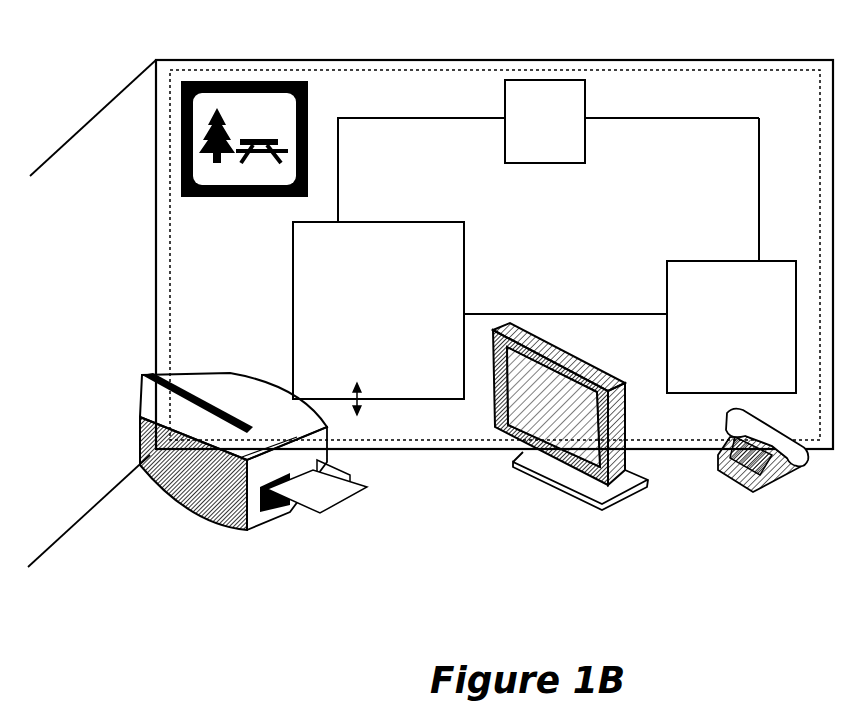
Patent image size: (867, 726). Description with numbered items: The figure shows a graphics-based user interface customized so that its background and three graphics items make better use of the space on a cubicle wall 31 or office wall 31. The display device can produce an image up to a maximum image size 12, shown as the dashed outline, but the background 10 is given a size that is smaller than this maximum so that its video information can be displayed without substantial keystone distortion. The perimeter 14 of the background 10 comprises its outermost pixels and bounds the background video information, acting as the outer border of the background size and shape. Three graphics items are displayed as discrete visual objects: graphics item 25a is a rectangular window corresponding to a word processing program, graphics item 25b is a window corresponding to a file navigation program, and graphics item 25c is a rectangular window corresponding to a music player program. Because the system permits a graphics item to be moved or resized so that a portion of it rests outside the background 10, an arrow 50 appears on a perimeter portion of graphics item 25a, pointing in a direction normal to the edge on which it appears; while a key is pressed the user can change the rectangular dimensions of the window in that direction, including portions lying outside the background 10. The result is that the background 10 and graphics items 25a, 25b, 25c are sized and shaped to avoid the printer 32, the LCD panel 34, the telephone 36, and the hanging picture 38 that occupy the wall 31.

The cubicle wall 31 is at (430, 60).
The maximum image size 12 is at (747, 68).
The background 10 is at (713, 112).
The perimeter 14 is at (762, 158).
The graphics item 25a is at (375, 222).
The graphics item 25b is at (586, 98).
The graphics item 25c is at (680, 260).
The arrow 50 is at (359, 392).
The hanging picture 38 is at (181, 147).
The printer 32 is at (297, 487).
The LCD panel 34 is at (563, 473).
The telephone 36 is at (725, 483).